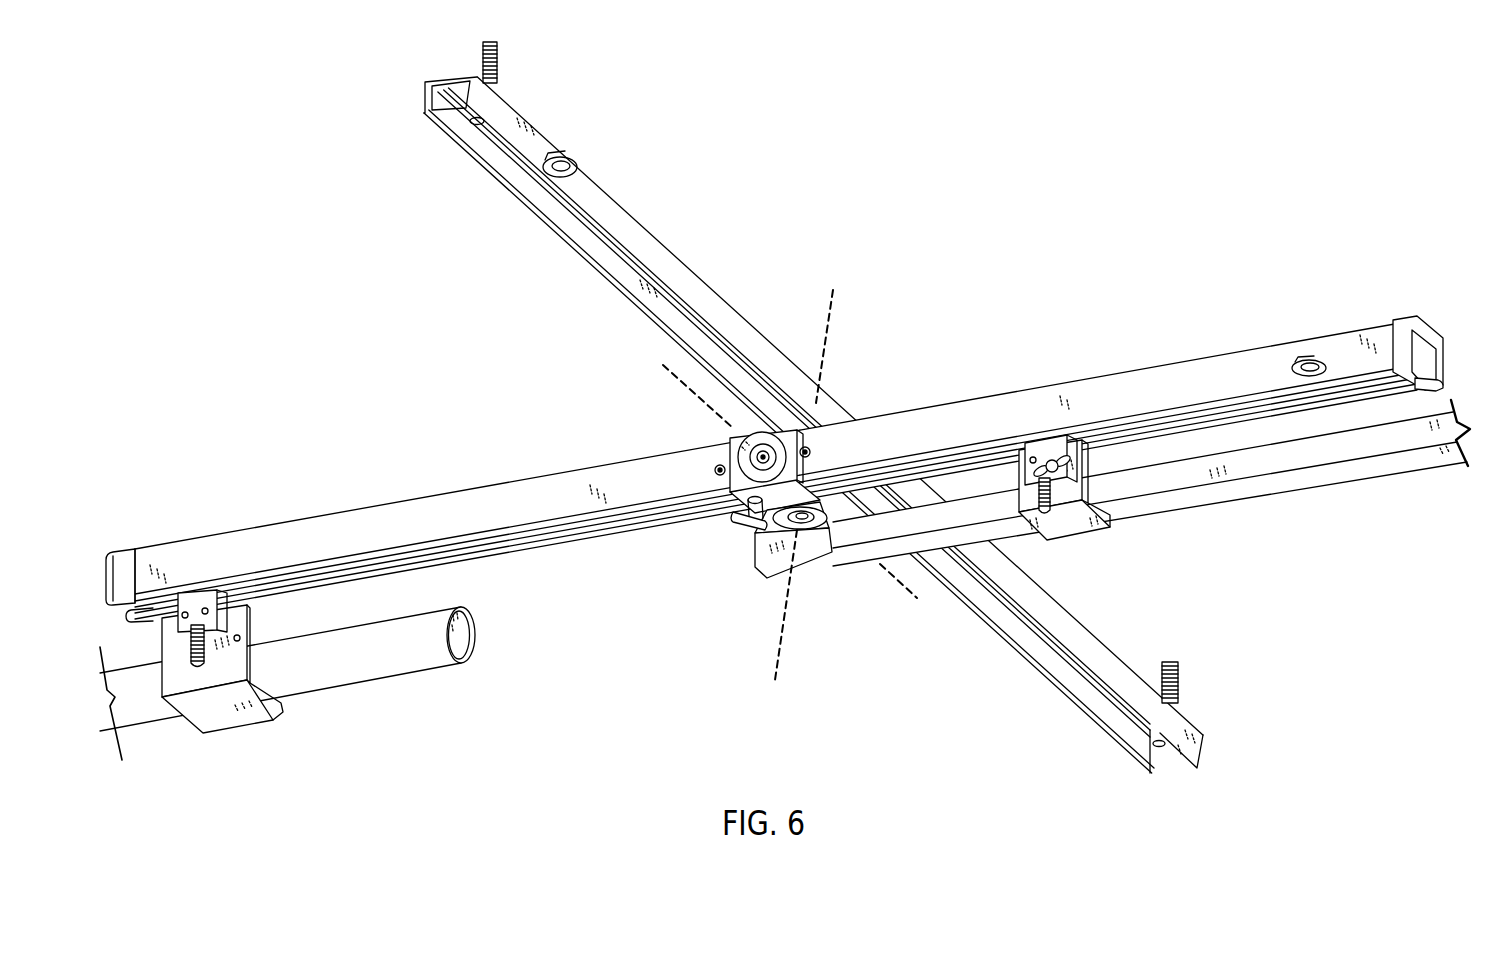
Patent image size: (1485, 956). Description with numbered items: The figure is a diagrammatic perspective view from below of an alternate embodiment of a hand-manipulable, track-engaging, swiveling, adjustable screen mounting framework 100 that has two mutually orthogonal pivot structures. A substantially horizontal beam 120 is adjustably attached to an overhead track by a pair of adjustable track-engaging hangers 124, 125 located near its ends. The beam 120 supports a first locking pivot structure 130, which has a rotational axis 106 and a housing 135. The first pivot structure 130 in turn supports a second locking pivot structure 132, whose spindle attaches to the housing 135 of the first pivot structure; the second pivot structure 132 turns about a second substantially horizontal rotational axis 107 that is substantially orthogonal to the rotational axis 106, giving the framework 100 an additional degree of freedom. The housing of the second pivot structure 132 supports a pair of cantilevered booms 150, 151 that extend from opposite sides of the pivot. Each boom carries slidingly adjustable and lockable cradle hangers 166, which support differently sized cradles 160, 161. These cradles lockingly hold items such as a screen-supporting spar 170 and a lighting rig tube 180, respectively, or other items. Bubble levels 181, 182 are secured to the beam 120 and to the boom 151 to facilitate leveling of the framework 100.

The screen mounting framework 100 is at (1031, 186).
The rotational axis 106 is at (836, 318).
The second substantially horizontal rotational axis 107 is at (665, 380).
The substantially horizontal beam 120 is at (630, 207).
The adjustable track-engaging hanger 124 is at (500, 49).
The adjustable track-engaging hanger 125 is at (1180, 673).
The first locking pivot structure 130 is at (758, 534).
The second locking pivot structure 132 is at (724, 485).
The housing of the first pivot structure 135 is at (832, 538).
The cantilevered boom 150 is at (290, 523).
The cantilevered boom 151 is at (1197, 350).
The cradle 160 is at (228, 720).
The cradle 161 is at (1080, 523).
The cradle hanger 166 is at (230, 609).
The screen-supporting spar 170 is at (1243, 485).
The lighting rig tube 180 is at (405, 662).
The bubble level 181 is at (563, 160).
The bubble level 182 is at (1306, 358).